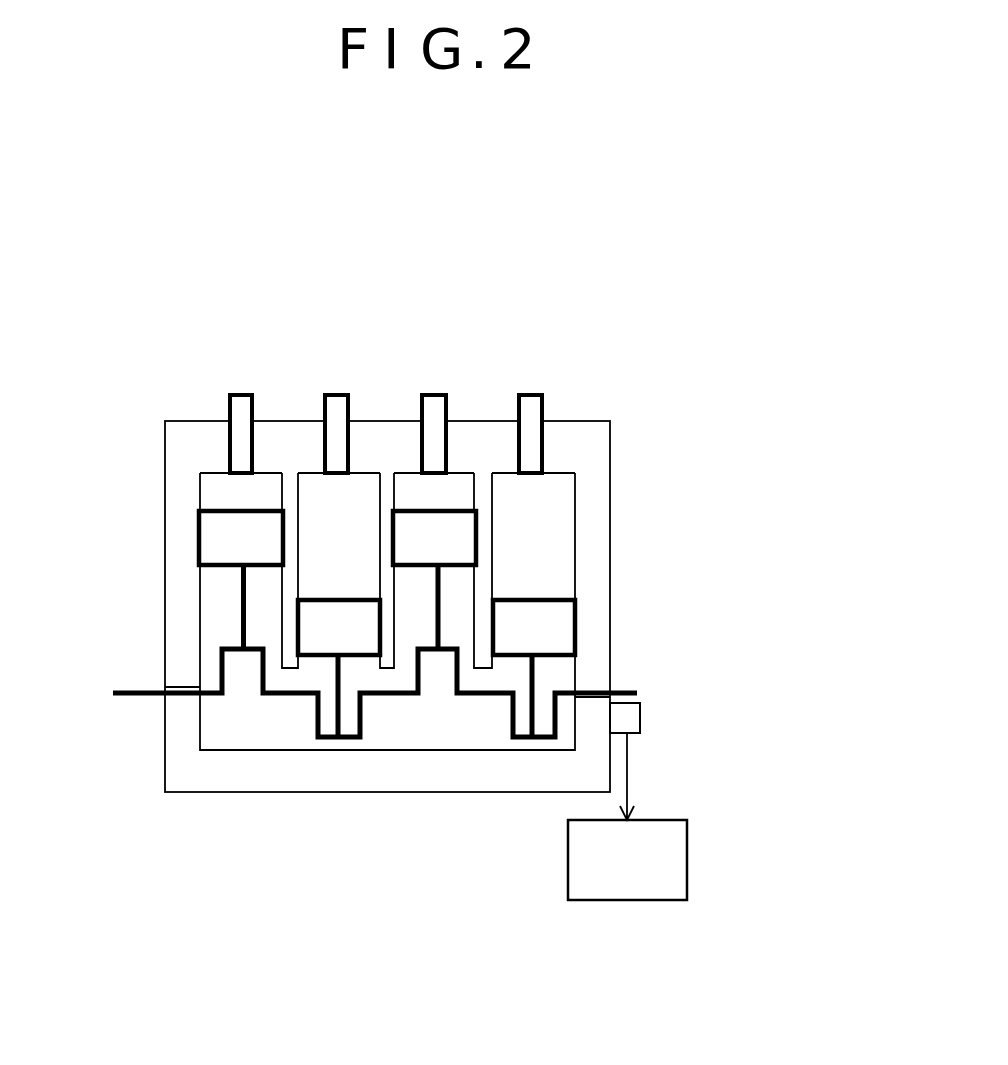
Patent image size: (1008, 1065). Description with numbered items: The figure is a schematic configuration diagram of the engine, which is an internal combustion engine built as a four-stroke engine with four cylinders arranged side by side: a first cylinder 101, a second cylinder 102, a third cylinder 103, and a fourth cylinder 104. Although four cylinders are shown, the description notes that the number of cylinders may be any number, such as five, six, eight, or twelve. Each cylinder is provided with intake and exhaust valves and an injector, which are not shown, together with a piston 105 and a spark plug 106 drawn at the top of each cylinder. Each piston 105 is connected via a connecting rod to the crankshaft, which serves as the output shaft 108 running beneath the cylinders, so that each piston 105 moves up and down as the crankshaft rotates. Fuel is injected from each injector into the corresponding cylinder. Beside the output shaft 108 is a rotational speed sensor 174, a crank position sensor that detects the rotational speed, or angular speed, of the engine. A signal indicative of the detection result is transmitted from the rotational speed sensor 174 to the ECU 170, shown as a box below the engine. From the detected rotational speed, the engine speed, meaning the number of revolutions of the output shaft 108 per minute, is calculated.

The first cylinder 101 is at (268, 470).
The second cylinder 102 is at (367, 473).
The third cylinder 103 is at (460, 473).
The fourth cylinder 104 is at (562, 473).
The piston 105 is at (200, 533).
The spark plug 106 is at (245, 393).
The output shaft 108 is at (290, 695).
The ECU 170 is at (687, 862).
The rotational speed sensor 174 is at (640, 721).